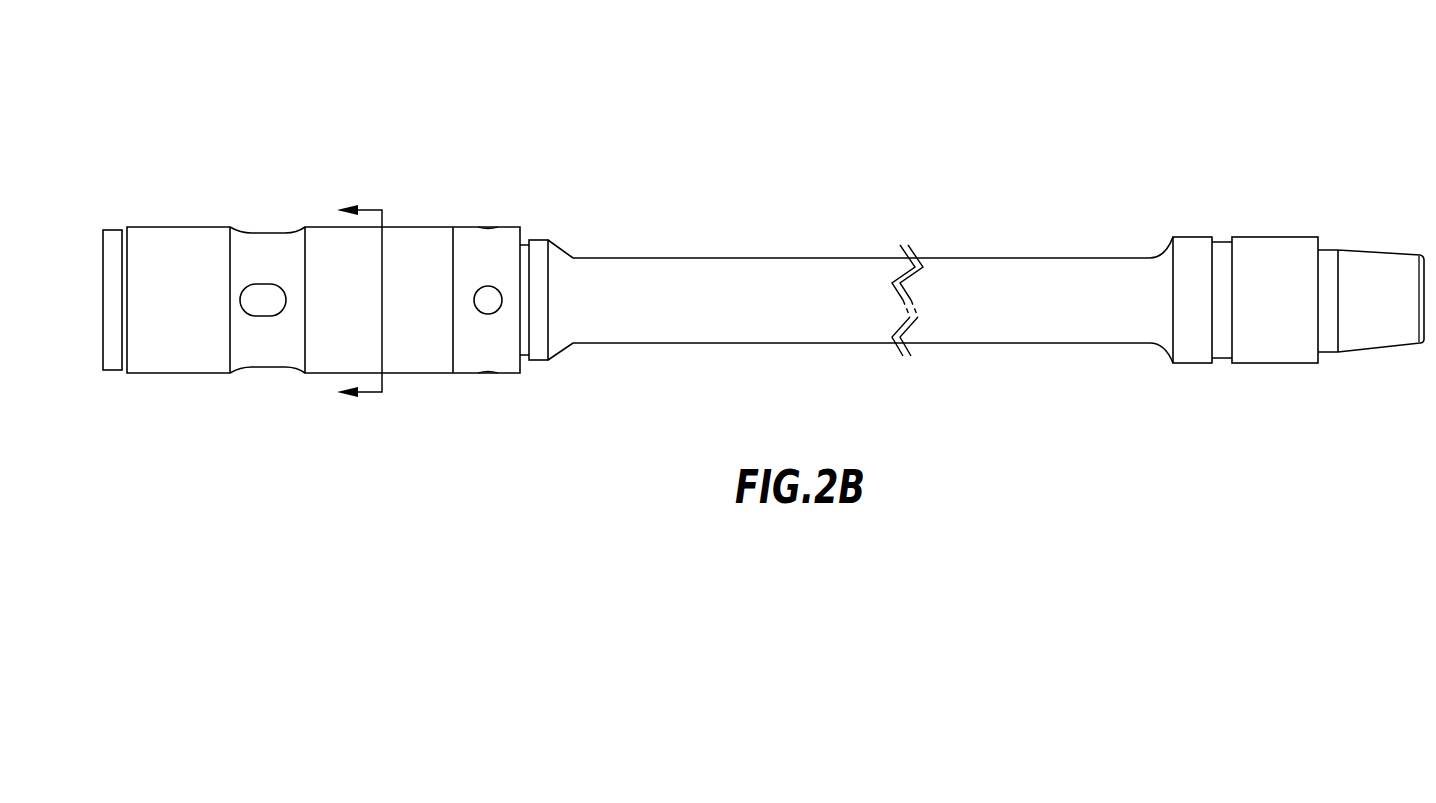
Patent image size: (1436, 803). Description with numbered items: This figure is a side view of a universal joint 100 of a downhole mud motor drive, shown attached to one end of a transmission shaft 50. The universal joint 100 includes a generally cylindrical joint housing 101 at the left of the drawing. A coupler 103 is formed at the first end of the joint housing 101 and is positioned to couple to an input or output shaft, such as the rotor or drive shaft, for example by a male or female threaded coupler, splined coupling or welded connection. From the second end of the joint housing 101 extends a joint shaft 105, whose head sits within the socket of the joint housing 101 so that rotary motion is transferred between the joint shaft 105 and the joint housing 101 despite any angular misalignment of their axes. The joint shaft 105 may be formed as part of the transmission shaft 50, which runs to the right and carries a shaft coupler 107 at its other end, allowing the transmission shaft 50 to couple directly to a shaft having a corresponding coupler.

The universal joint 100 is at (335, 150).
The joint housing 101 is at (430, 227).
The coupler 103 is at (100, 236).
The joint shaft 105 is at (670, 258).
The transmission shaft 50 is at (964, 188).
The shaft coupler 107 is at (1353, 228).